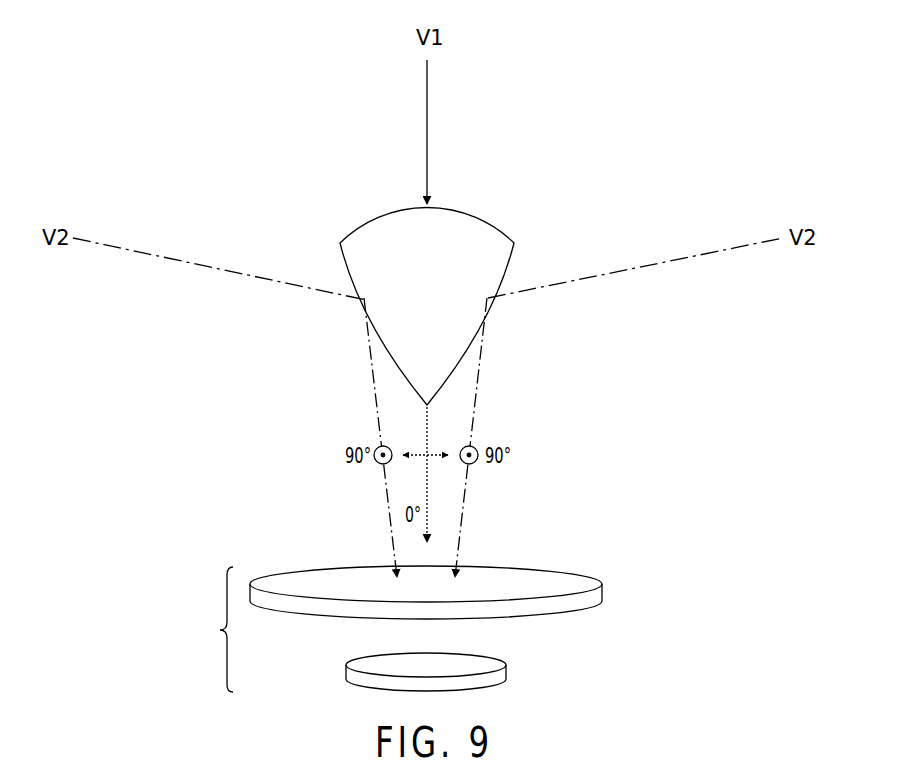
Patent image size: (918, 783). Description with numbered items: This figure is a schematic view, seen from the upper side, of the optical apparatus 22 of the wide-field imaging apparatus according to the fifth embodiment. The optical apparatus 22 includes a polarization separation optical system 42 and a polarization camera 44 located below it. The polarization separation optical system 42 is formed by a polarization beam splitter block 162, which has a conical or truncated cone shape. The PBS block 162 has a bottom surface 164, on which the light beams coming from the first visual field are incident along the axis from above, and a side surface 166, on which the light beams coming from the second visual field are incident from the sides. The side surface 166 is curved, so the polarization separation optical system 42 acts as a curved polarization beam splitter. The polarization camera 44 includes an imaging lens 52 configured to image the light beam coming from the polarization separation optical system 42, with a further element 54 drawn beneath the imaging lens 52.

The polarization separation optical system 42 is at (531, 255).
The side surface 166 is at (383, 228).
The bottom surface 164 is at (455, 207).
The polarization beam splitter (PBS) block 162 is at (481, 244).
The optical apparatus 22 is at (583, 395).
The imaging lens 52 is at (603, 597).
The second disc (rotating plate) 54 is at (504, 677).
The polarization camera 44 is at (210, 629).